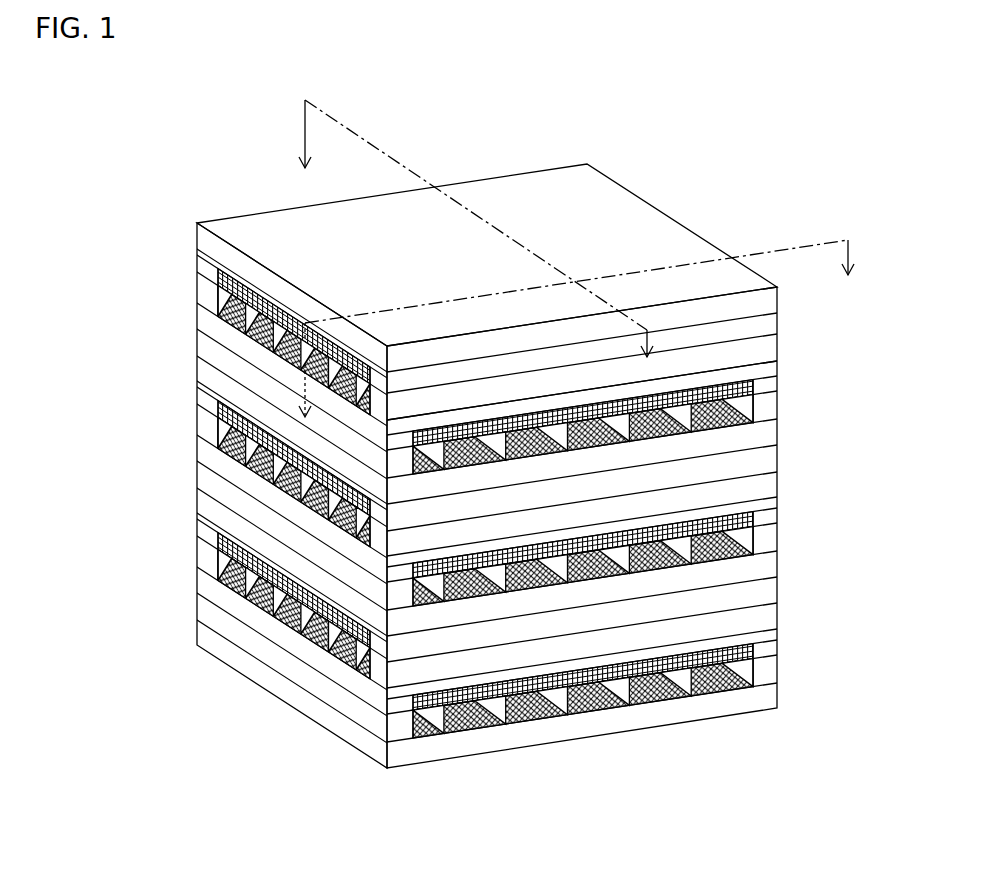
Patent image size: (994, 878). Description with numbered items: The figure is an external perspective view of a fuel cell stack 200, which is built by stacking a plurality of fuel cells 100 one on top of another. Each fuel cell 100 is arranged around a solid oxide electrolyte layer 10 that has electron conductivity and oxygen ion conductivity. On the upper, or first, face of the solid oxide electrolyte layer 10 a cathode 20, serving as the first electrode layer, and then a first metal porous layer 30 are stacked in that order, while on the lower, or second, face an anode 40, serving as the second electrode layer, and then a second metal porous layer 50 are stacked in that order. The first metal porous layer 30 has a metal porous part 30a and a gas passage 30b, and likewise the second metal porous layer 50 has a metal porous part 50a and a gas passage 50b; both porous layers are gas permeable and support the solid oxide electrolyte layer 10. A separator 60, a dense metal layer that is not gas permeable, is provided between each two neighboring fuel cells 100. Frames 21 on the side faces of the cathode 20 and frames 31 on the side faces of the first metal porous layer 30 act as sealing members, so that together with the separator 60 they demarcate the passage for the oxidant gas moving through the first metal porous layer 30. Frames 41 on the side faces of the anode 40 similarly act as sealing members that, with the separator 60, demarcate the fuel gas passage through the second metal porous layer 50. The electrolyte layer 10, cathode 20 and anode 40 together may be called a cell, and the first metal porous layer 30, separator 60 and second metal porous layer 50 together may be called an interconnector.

The fuel cell 100 is at (135, 214).
The fuel cell stack 200 is at (908, 110).
The solid oxide electrolyte layer 10 is at (768, 365).
The cathode 20 is at (204, 347).
The frame 21 is at (766, 353).
The first metal porous layer 30 is at (110, 256).
The metal porous part 30a is at (294, 482).
The gas passage 30b is at (294, 482).
The frame 31 is at (292, 457).
The anode 40 is at (777, 391).
The frame 41 is at (582, 545).
The second metal porous layer 50 is at (912, 448).
The metal porous part 50a is at (583, 566).
The gas passage 50b is at (770, 382).
The separator 60 is at (600, 188).